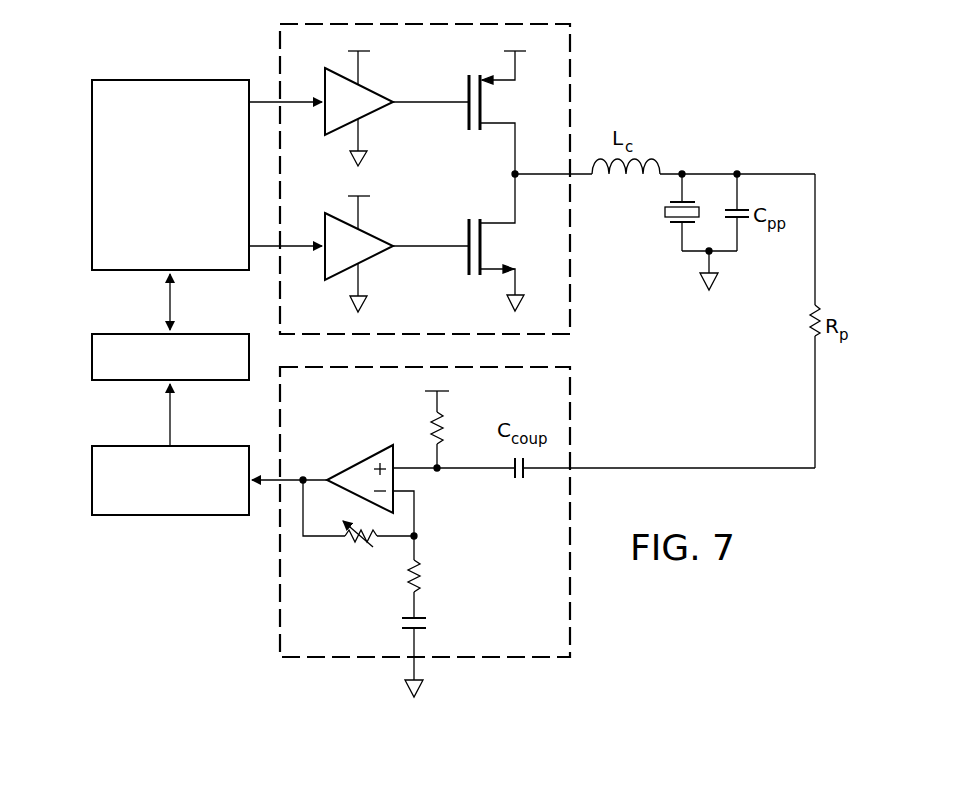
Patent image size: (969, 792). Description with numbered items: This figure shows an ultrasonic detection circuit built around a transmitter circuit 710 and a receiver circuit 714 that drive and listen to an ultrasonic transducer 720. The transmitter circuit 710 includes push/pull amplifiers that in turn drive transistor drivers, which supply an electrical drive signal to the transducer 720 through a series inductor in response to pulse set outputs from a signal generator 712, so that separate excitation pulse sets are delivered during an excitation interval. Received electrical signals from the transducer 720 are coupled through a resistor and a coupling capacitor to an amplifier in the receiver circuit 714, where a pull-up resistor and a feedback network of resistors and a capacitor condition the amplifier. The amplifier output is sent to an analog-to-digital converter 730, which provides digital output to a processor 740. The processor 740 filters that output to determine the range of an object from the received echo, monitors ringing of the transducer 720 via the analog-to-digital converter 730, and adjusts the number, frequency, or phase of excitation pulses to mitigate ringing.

The transmitter circuit 710 is at (574, 87).
The signal generator 712 is at (150, 219).
The receiver circuit 714 is at (277, 566).
The ultrasonic transducer 720 is at (665, 212).
The analog-to-digital (A/D) converter 730 is at (92, 487).
The processor 740 is at (92, 356).